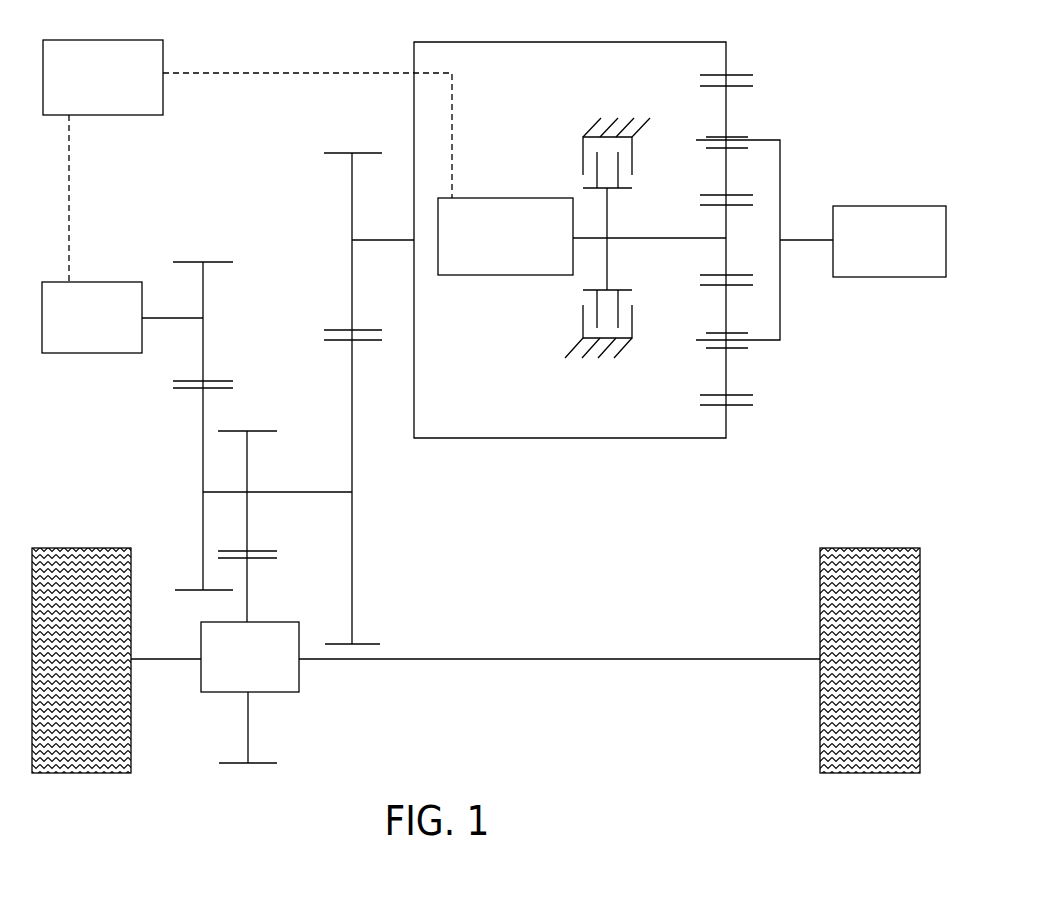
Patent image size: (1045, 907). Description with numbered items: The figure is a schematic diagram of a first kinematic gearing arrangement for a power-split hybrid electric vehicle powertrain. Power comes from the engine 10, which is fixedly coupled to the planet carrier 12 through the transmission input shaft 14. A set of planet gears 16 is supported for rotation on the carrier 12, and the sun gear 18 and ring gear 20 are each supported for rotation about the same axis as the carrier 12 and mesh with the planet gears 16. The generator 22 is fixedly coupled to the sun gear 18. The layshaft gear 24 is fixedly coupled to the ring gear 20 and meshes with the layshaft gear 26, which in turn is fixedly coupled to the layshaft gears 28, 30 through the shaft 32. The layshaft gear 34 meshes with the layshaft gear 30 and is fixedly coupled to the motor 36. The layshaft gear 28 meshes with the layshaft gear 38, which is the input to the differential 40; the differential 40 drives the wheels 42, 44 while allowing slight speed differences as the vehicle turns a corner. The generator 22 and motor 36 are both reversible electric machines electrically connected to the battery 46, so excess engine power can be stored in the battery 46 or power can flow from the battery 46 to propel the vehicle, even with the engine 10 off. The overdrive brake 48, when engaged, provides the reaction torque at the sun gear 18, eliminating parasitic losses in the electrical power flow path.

The engine 10 is at (883, 205).
The planet carrier 12 is at (782, 313).
The transmission input shaft 14 is at (782, 240).
The planet gears 16 is at (727, 375).
The sun gear 18 is at (727, 233).
The ring gear 20 is at (727, 418).
The generator 22 is at (520, 198).
The layshaft gear 24 is at (352, 195).
The layshaft gear 26 is at (355, 585).
The layshaft gear 28 is at (248, 478).
The layshaft gear 30 is at (202, 432).
The shaft 32 is at (295, 497).
The layshaft gear 34 is at (203, 288).
The motor 36 is at (102, 281).
The layshaft gear 38 is at (248, 722).
The differential 40 is at (298, 685).
The wheel 42 is at (85, 547).
The wheel 44 is at (820, 673).
The battery 46 is at (145, 115).
The overdrive brake 48 is at (583, 312).